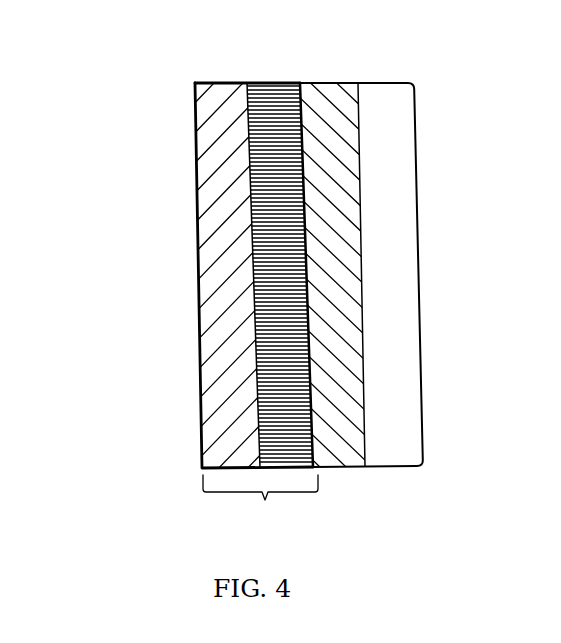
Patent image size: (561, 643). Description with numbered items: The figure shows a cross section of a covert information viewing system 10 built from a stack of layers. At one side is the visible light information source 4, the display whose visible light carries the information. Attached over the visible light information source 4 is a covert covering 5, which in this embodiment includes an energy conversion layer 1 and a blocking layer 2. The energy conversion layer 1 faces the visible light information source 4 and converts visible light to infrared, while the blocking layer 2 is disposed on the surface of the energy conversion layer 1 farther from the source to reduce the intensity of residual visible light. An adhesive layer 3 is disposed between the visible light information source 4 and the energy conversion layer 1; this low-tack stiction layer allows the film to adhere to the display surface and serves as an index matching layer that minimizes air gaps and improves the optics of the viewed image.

The covert information viewing system 10 is at (234, 275).
The energy conversion layer 1 is at (281, 83).
The blocking layer 2 is at (223, 83).
The adhesive layer 3 is at (324, 83).
The visible light information source 4 is at (398, 470).
The covert covering 5 is at (260, 503).